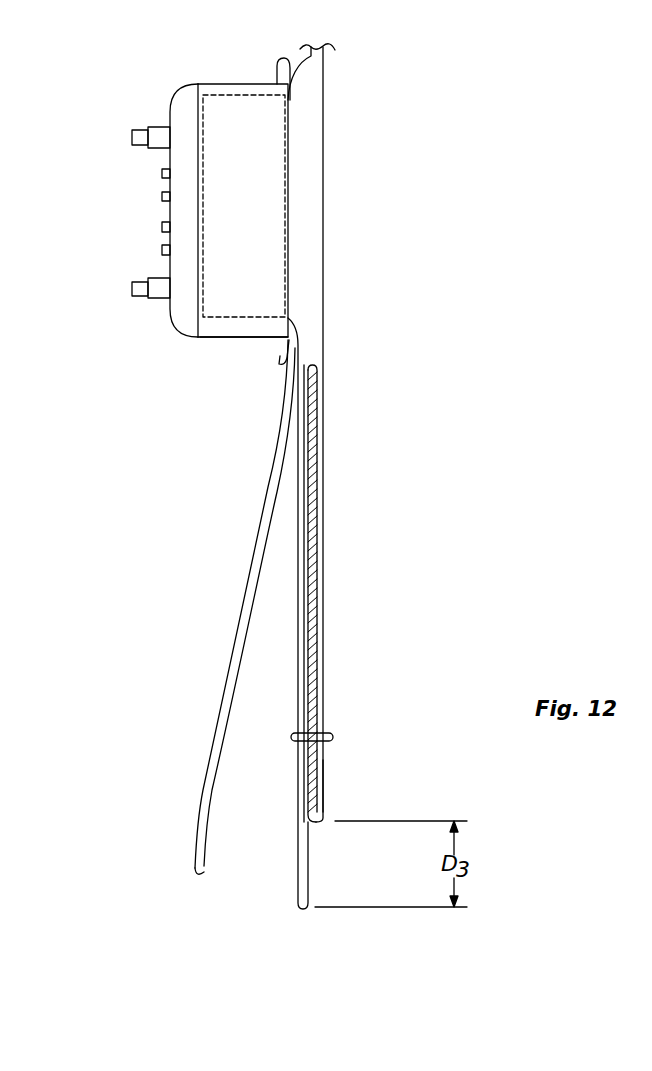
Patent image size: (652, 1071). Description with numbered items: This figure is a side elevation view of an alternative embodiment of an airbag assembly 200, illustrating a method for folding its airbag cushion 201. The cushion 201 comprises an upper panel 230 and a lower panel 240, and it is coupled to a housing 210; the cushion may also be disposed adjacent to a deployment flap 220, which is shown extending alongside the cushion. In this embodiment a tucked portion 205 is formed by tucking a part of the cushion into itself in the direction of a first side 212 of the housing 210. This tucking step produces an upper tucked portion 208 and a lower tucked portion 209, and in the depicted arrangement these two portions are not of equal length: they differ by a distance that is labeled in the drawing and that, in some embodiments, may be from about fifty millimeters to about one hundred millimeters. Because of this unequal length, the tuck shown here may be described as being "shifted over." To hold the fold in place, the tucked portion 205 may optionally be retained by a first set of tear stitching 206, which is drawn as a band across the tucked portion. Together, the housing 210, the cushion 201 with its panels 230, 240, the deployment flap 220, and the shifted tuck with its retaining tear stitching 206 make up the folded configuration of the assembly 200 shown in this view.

The airbag assembly 200 is at (392, 129).
The airbag cushion 201 is at (330, 258).
The tucked portion 205 is at (313, 668).
The first set of tear stitching 206 is at (333, 736).
The upper tucked portion 208 is at (327, 774).
The lower tucked portion 209 is at (298, 791).
The housing 210 is at (170, 101).
The first side 212 is at (235, 338).
The deployment flap 220 is at (232, 643).
The upper panel 230 is at (326, 56).
The lower panel 240 is at (300, 50).